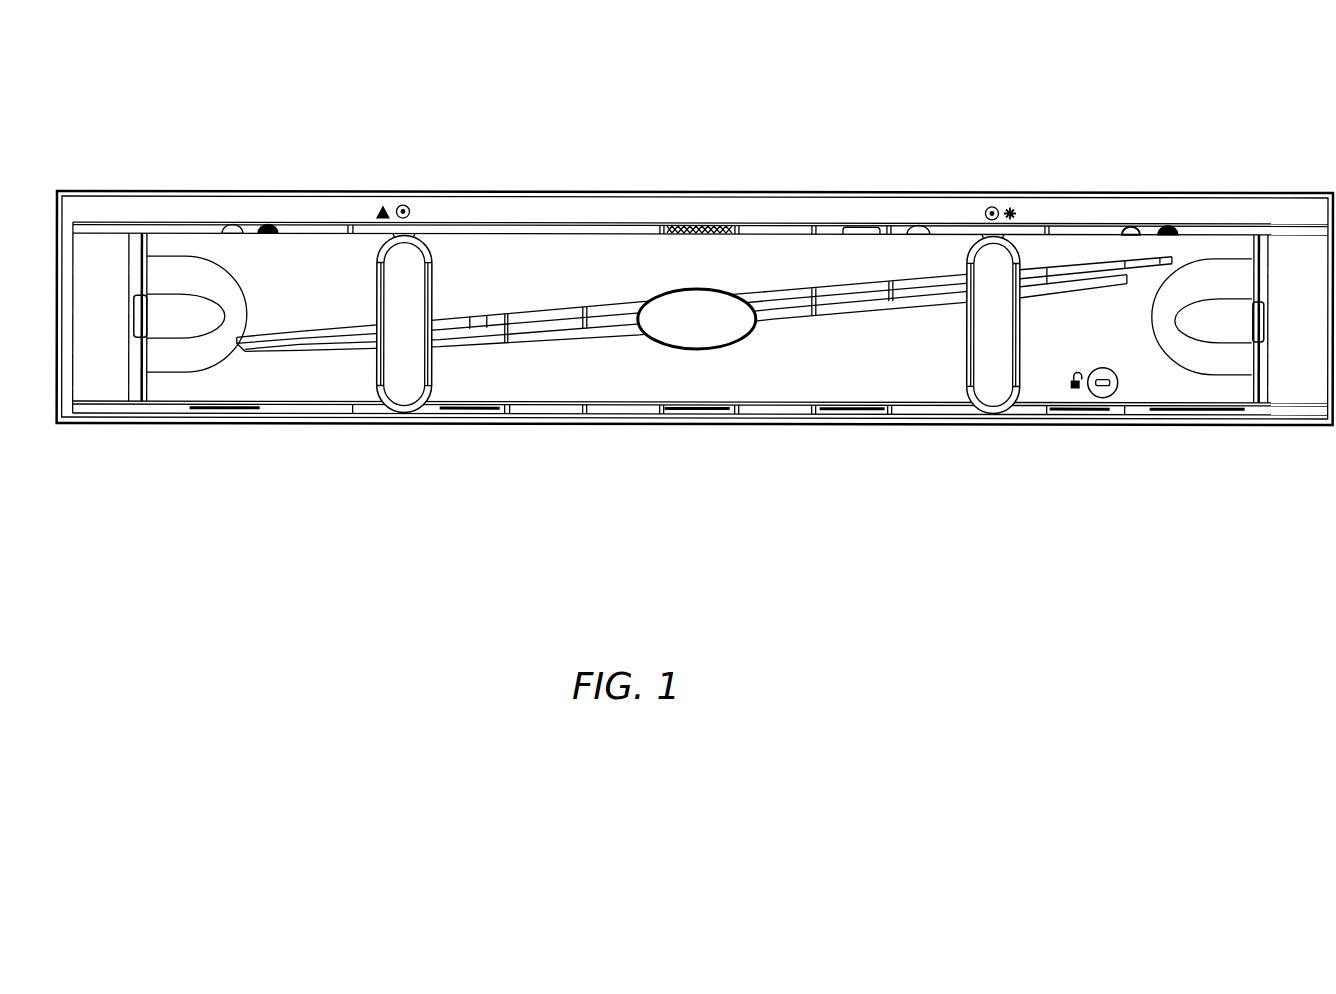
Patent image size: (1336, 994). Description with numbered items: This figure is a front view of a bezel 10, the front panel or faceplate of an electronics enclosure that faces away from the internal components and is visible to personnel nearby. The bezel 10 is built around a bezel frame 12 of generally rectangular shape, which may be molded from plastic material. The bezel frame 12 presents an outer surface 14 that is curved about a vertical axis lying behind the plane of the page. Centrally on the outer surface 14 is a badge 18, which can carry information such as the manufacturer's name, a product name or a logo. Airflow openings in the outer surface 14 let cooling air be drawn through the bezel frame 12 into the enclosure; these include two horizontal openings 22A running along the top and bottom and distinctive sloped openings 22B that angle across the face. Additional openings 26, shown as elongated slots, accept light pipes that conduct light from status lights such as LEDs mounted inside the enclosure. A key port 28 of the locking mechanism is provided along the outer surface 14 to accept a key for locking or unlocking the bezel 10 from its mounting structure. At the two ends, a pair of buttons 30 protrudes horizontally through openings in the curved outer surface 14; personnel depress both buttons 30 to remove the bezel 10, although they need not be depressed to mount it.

The bezel 10 is at (786, 148).
The bezel frame 12 is at (613, 172).
The outer surface 14 is at (1197, 257).
The badge 18 is at (673, 320).
The horizontal openings 22A is at (1100, 228).
The sloped openings 22B is at (543, 318).
The light pipe openings 26 is at (403, 204).
The key port 28 is at (1103, 396).
The buttons 30 is at (134, 295).